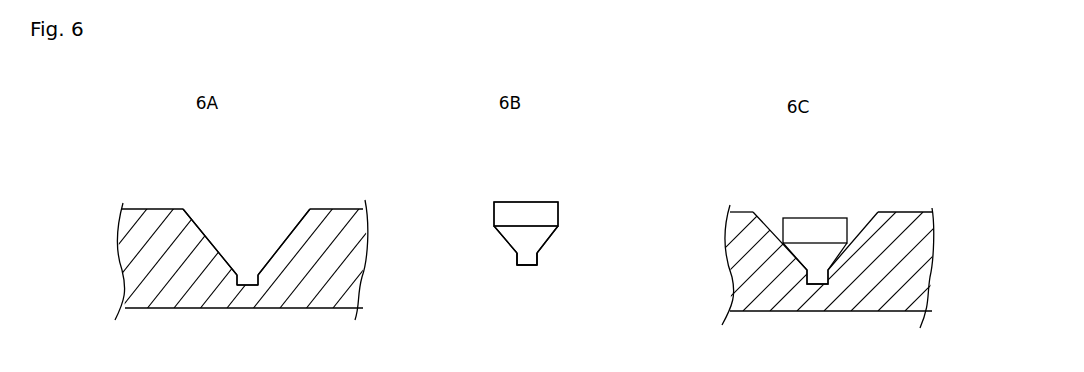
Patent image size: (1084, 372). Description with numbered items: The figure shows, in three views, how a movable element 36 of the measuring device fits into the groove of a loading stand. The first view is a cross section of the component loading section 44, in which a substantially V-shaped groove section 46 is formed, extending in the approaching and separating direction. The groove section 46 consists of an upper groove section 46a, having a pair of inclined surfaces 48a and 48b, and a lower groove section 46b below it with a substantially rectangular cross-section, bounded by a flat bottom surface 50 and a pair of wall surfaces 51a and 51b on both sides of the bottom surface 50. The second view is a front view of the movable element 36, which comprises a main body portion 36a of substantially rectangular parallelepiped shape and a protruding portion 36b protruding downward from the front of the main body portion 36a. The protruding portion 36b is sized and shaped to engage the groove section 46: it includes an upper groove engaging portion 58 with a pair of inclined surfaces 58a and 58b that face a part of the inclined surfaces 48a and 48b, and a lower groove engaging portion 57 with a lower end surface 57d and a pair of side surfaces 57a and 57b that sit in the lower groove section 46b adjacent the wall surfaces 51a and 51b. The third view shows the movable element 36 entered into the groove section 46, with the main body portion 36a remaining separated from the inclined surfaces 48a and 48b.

In FIG. 6C, the movable element 36 is at (802, 208).
In FIG. 6B, the main body portion 36a is at (517, 208).
In FIG. 6B, the protruding portion 36b is at (553, 248).
In FIG. 6A, the component loading section 44 is at (168, 218).
In FIG. 6C, the component loading section 44 is at (900, 223).
In FIG. 6A, the groove section 46 is at (277, 188).
In FIG. 6C, the groove section 46 is at (872, 210).
In FIG. 6A, the upper groove section 46a is at (207, 248).
In FIG. 6A, the lower groove section 46b is at (235, 287).
In FIG. 6A, the inclined surface 48a is at (190, 210).
In FIG. 6A, the inclined surface 48b is at (300, 212).
In FIG. 6A, the bottom surface 50 is at (251, 278).
In FIG. 6A, the wall surface 51a is at (240, 273).
In FIG. 6A, the wall surface 51b is at (253, 277).
In FIG. 6B, the lower groove engaging portion 57 is at (533, 265).
In FIG. 6B, the side surface 57a is at (517, 262).
In FIG. 6B, the side surface 57b is at (538, 260).
In FIG. 6B, the lower end surface 57d is at (527, 265).
In FIG. 6B, the upper groove engaging portion 58 is at (545, 230).
In FIG. 6B, the inclined surface 58a is at (494, 228).
In FIG. 6B, the inclined surface 58b is at (553, 235).